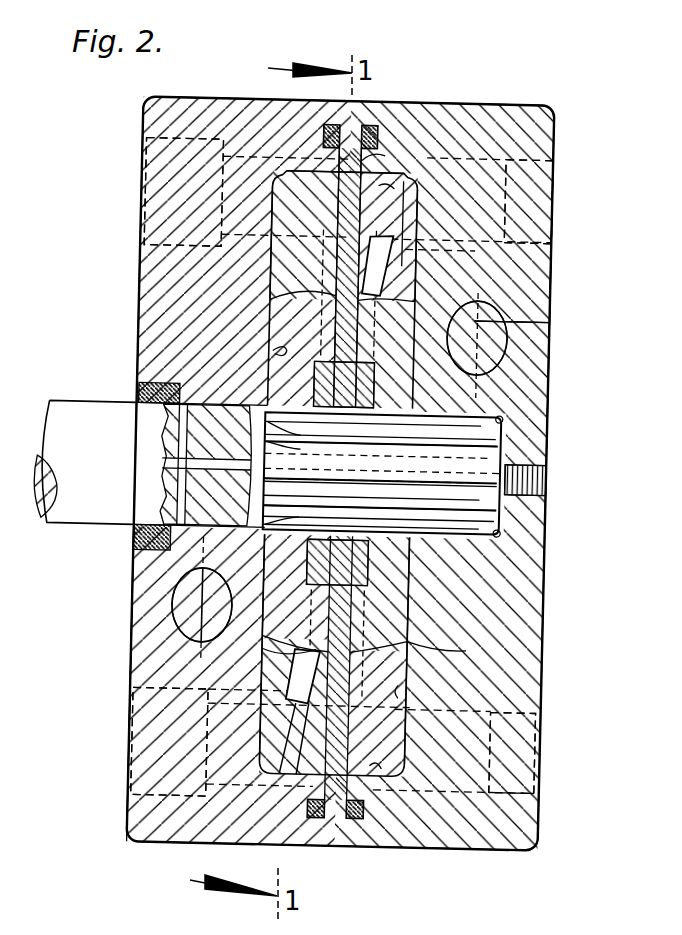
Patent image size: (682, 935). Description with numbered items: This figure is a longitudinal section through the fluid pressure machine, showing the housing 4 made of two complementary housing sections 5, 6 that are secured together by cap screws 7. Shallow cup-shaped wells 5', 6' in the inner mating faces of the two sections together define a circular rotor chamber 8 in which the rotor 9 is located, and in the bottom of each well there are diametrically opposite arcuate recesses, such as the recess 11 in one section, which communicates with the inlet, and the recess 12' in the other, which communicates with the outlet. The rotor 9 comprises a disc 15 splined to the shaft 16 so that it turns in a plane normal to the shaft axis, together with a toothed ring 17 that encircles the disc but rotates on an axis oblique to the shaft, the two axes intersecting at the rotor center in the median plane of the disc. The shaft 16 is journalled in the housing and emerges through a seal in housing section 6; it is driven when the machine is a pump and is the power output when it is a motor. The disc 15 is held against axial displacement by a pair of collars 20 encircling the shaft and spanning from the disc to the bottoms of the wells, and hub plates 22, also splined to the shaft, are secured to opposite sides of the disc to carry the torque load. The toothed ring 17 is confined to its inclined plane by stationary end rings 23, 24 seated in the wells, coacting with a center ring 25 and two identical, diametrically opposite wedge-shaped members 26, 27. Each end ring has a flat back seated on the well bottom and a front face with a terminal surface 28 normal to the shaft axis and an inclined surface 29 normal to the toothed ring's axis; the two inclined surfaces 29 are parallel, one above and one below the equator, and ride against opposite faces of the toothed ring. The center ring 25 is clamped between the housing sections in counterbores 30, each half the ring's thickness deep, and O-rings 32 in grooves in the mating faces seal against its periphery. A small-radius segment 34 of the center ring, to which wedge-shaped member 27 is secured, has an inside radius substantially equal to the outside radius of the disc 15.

The housing 4 is at (597, 153).
The housing section 5 is at (563, 296).
The well 5' is at (485, 682).
The housing section 6 is at (107, 686).
The well 6' is at (192, 344).
The cap screws 7 is at (143, 160).
The rotor chamber 8 is at (380, 770).
The rotor 9 is at (352, 663).
The arcuate recess 11 is at (548, 322).
The arcuate recess 12' is at (156, 604).
The disc 15 is at (345, 348).
The shaft 16 is at (122, 475).
The toothed ring 17 is at (403, 171).
The collars 20 is at (283, 320).
The hub plates 22 is at (290, 382).
The end ring 23 is at (403, 726).
The end ring 24 is at (262, 722).
The center ring 25 is at (365, 165).
The wedge-shaped member 26 is at (378, 190).
The wedge-shaped member 27 is at (288, 775).
The terminal surface 28 is at (342, 196).
The inclined surface 29 is at (425, 190).
The counterbore 30 is at (320, 818).
The O-rings 32 is at (328, 125).
The segment 34 is at (300, 258).